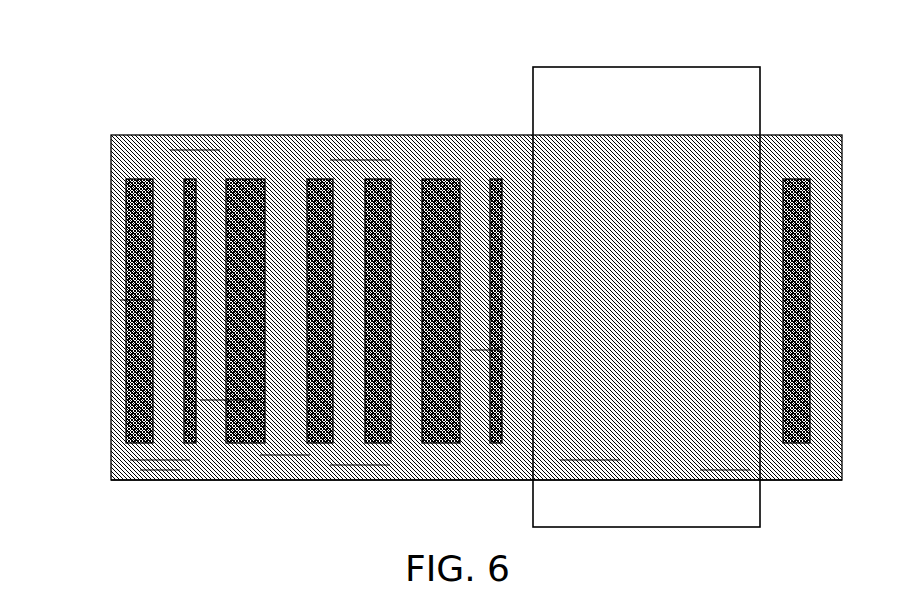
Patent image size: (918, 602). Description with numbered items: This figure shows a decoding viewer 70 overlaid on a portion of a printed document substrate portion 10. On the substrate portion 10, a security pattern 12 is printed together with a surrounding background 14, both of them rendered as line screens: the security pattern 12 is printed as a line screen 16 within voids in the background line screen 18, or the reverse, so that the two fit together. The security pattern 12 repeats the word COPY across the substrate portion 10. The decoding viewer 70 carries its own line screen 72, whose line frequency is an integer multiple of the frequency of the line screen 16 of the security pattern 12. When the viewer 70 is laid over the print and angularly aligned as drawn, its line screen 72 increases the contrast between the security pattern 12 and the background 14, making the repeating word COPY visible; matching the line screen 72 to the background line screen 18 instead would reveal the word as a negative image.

The document substrate portion 10 is at (441, 296).
The security pattern 12 is at (128, 156).
The background 14 is at (292, 480).
The line screen 16 is at (278, 168).
The background line screen 18 is at (152, 468).
The decoding viewer 70 is at (695, 265).
The line screen 72 is at (626, 95).